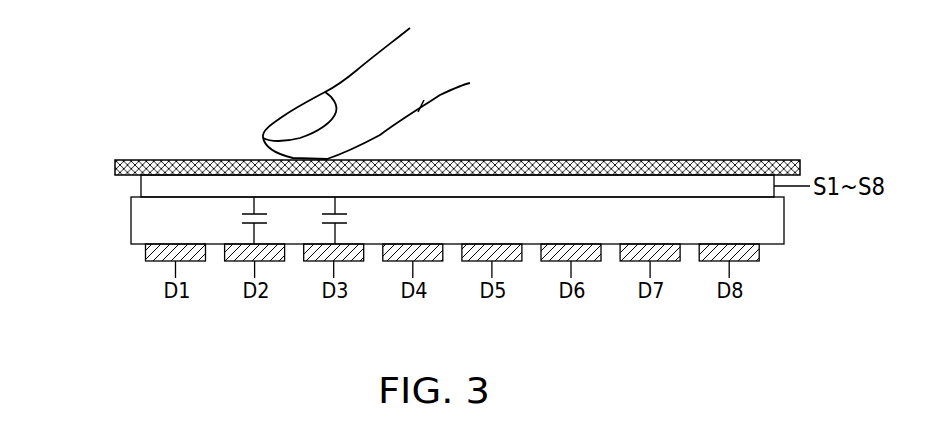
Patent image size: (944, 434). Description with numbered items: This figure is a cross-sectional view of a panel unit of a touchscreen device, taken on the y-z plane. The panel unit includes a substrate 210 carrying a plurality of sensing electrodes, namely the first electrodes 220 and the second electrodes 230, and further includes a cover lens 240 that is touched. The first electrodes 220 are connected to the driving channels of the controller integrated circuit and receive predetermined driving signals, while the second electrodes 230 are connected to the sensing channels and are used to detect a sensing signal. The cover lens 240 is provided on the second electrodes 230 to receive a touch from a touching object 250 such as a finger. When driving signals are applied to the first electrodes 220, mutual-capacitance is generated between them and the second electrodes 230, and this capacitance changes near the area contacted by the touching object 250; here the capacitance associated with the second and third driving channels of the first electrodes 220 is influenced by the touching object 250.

The substrate 210 is at (142, 218).
The first electrodes 220 is at (145, 259).
The second electrodes 230 is at (148, 188).
The cover lens 240 is at (587, 158).
The touching object 250 is at (375, 77).